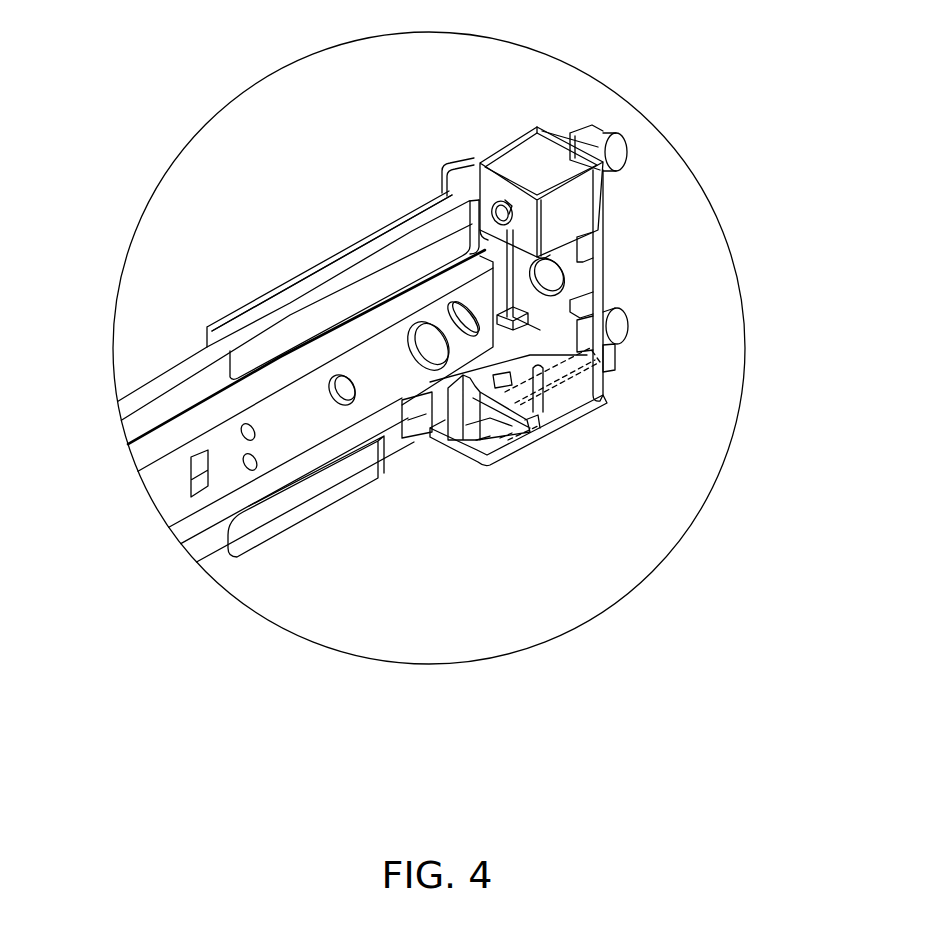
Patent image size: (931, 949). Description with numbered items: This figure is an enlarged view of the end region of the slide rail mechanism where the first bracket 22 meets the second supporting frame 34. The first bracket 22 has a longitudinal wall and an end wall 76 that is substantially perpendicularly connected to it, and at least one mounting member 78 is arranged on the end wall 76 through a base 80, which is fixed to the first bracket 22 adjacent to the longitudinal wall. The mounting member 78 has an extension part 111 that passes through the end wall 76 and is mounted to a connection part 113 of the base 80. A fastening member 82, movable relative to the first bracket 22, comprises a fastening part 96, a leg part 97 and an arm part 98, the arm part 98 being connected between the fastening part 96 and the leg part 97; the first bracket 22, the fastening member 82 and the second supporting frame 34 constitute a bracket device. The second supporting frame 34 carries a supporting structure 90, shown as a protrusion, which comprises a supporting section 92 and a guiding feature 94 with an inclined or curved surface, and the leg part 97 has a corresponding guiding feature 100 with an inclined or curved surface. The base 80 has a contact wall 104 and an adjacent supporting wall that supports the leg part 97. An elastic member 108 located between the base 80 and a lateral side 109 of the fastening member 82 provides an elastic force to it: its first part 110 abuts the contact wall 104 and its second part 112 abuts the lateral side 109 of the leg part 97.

The first bracket 22 is at (382, 213).
The second supporting frame 34 is at (170, 375).
The end wall 76 is at (548, 126).
The mounting member 78 is at (585, 125).
The base 80 is at (529, 158).
The fastening member 82 is at (582, 310).
The supporting structure 90 is at (413, 439).
The supporting section 92 is at (436, 442).
The guiding feature 94 is at (530, 423).
The fastening part 96 is at (603, 307).
The leg part 97 is at (468, 432).
The arm part 98 is at (595, 392).
The guiding feature 100 is at (455, 417).
The contact wall 104 is at (523, 430).
The elastic member 108 is at (513, 440).
The lateral side 109 is at (478, 436).
The first part 110 is at (504, 440).
The extension part 111 is at (497, 203).
The second part 112 is at (478, 413).
The connection part 113 is at (504, 201).